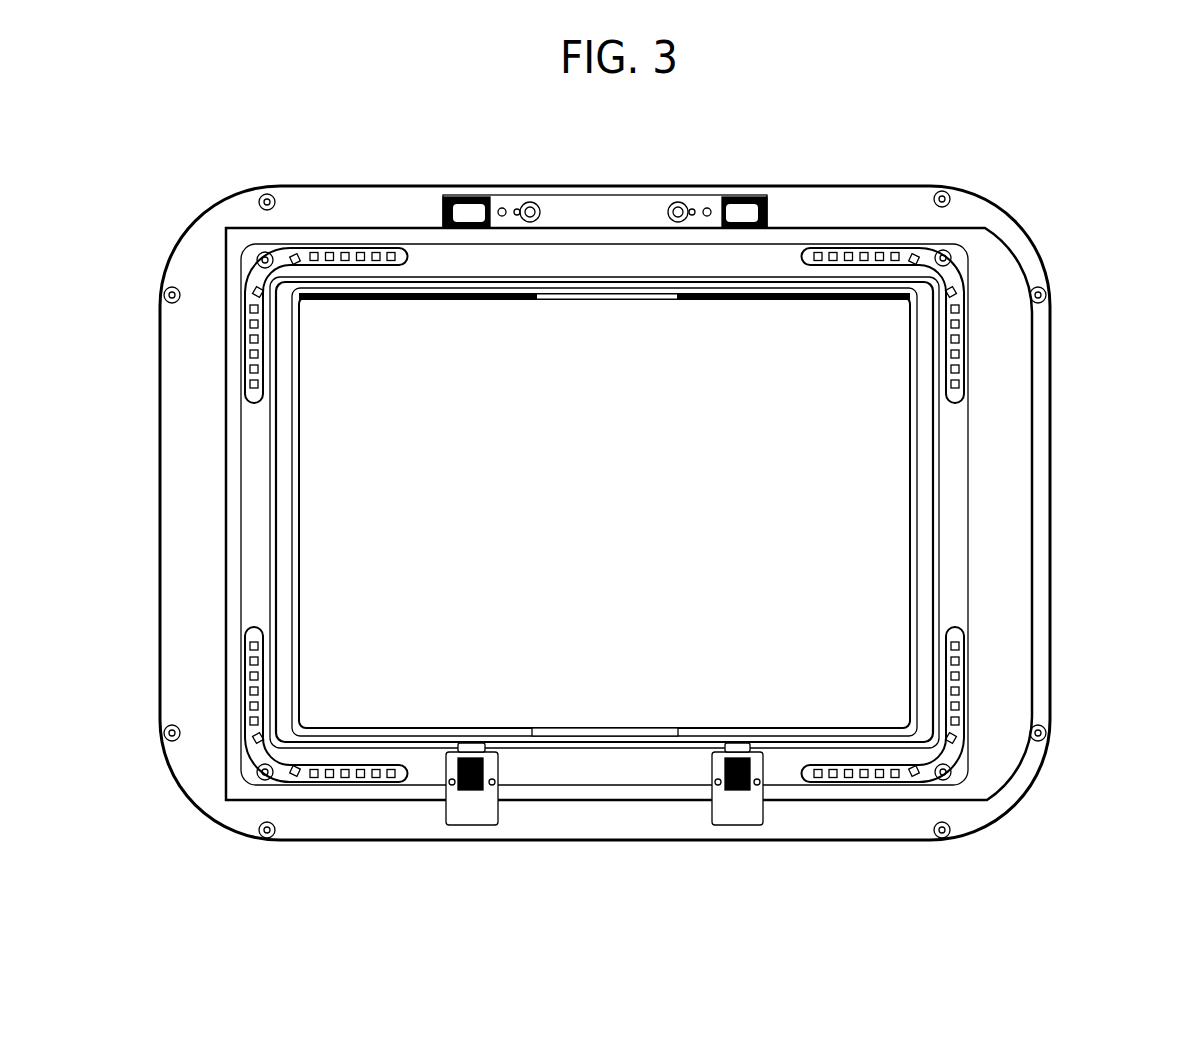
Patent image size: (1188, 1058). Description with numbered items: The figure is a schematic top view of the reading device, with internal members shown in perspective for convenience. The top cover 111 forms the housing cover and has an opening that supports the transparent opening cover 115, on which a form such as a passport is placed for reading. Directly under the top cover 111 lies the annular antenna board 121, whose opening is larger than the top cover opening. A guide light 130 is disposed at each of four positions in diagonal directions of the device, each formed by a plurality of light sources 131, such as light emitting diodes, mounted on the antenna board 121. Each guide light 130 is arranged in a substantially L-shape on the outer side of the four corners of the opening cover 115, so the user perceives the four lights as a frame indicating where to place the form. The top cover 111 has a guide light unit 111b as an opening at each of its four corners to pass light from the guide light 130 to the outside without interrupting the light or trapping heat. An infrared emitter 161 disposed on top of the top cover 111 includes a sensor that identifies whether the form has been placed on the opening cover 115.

The top cover 111 is at (1050, 410).
The guide light unit 111b is at (955, 752).
The opening cover 115 is at (878, 606).
The antenna board 121 is at (993, 237).
The guide light 130 is at (333, 246).
The light source 131 is at (360, 257).
The infrared emitter 161 is at (732, 748).